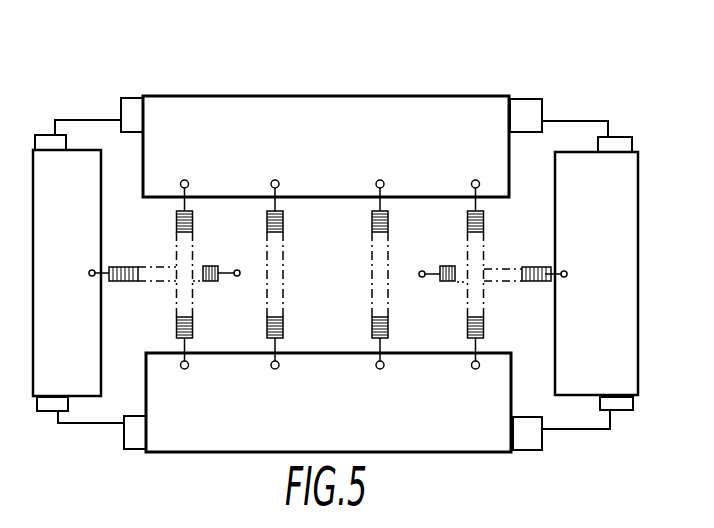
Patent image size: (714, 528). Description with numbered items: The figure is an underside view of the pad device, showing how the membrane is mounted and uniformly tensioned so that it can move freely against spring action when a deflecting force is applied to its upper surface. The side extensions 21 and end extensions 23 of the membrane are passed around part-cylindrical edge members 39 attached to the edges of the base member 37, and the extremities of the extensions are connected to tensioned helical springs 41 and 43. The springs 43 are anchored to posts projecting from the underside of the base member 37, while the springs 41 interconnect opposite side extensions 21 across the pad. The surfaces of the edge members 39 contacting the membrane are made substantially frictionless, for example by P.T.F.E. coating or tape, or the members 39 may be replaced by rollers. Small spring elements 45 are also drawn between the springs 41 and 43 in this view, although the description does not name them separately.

The side extension 21 is at (327, 274).
The end extension 23 is at (335, 273).
The base member 37 is at (581, 127).
The part-cylindrical edge member 39 is at (127, 112).
The helical spring 41 is at (372, 222).
The helical spring 43 is at (130, 283).
The small coil spring 45 is at (238, 277).